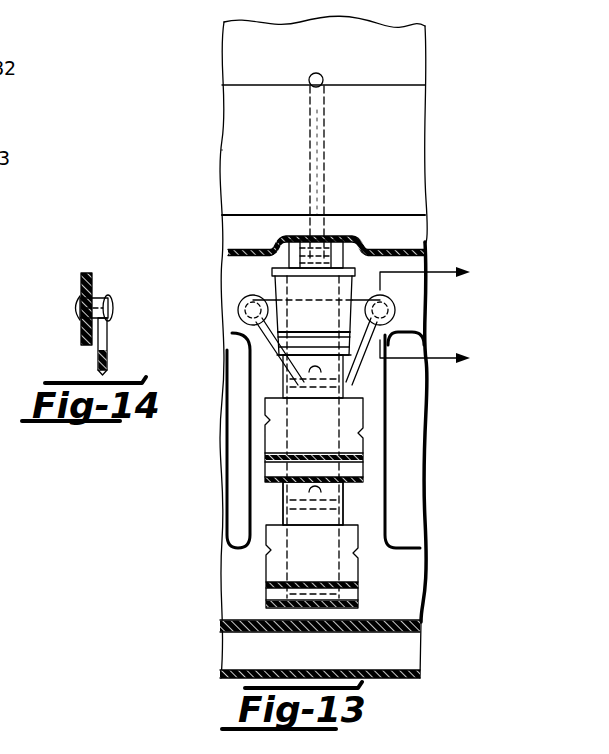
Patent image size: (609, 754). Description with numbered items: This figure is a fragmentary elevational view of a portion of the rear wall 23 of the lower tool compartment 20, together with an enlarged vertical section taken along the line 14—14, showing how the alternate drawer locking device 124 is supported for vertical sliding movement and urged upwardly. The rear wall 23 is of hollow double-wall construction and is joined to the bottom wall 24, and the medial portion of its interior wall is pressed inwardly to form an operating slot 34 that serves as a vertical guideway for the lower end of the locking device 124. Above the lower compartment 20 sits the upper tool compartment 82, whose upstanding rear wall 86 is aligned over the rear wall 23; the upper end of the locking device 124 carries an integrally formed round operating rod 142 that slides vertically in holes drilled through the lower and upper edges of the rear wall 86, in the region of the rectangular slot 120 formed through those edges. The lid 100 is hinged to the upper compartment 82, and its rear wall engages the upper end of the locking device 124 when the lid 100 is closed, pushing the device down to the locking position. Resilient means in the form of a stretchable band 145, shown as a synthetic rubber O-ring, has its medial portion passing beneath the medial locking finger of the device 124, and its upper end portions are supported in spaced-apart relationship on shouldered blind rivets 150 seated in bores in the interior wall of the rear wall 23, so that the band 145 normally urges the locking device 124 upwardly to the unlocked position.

In FIG. 13, the lower tool compartment 20 is at (430, 600).
In FIG. 13, the rear wall 23 is at (246, 284).
In FIG. 14, the rear wall 23 is at (86, 272).
In FIG. 13, the bottom wall 24 is at (222, 653).
In FIG. 13, the operating slot 34 is at (345, 497).
In FIG. 13, the upper tool compartment 82 is at (212, 153).
In FIG. 13, the rear wall of the upper tool compartment 86 is at (384, 158).
In FIG. 13, the lid 100 is at (212, 50).
In FIG. 13, the rectangular slot 120 is at (308, 84).
In FIG. 13, the drawer locking device 124 is at (272, 504).
In FIG. 13, the operating rod 142 is at (322, 179).
In FIG. 13, the stretchable band 145 is at (386, 371).
In FIG. 14, the stretchable band 145 is at (108, 343).
In FIG. 14, the shouldered blind rivets 150 is at (112, 303).
In FIG. 13, the section line 14 is at (443, 316).